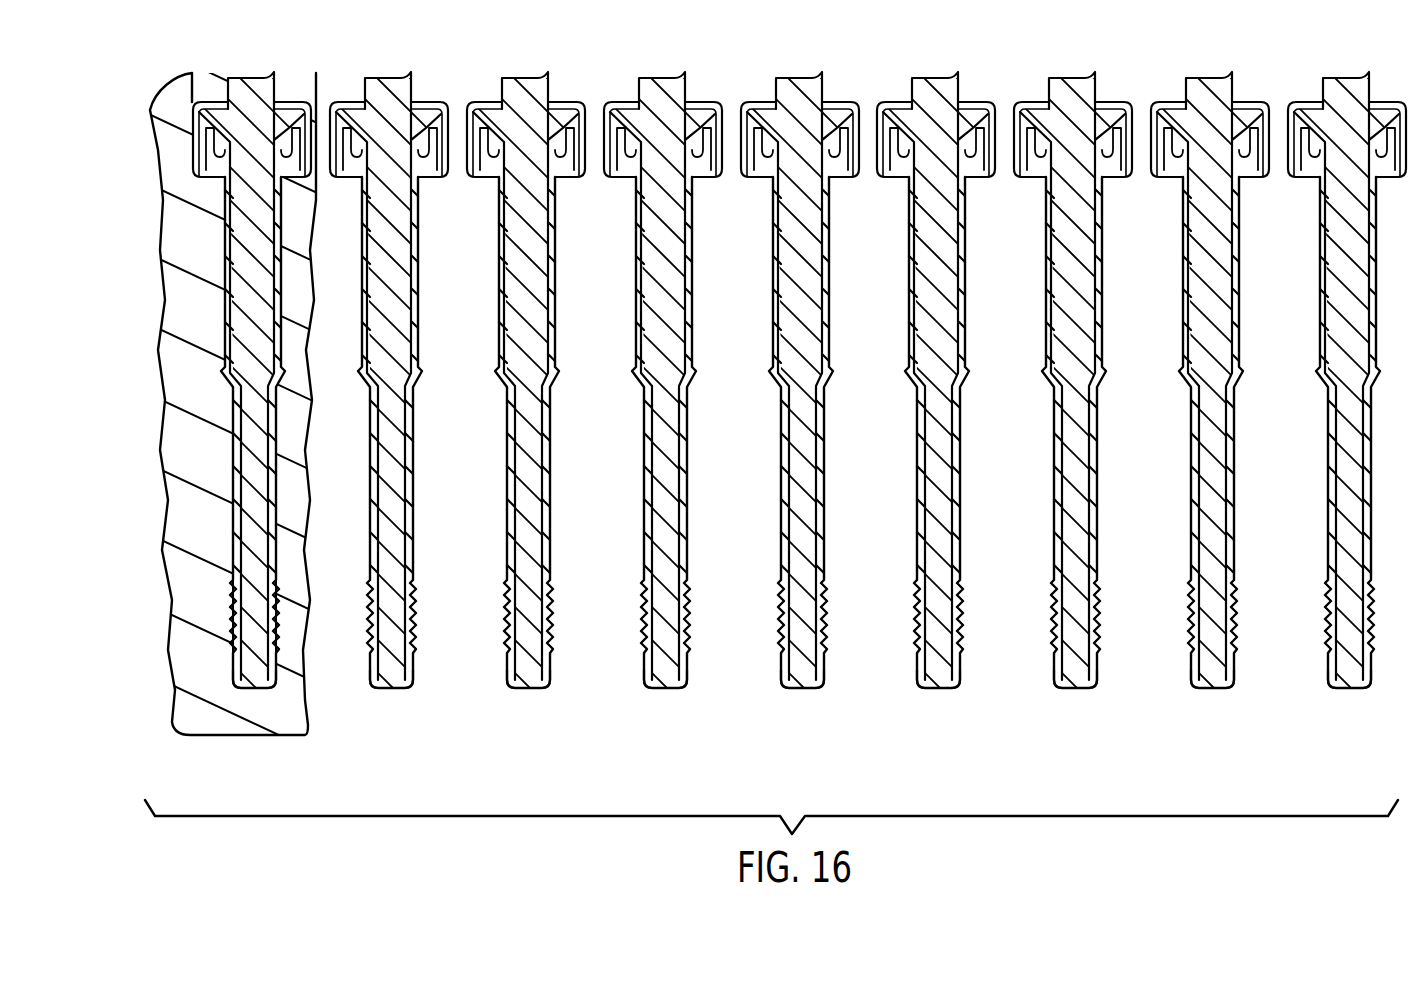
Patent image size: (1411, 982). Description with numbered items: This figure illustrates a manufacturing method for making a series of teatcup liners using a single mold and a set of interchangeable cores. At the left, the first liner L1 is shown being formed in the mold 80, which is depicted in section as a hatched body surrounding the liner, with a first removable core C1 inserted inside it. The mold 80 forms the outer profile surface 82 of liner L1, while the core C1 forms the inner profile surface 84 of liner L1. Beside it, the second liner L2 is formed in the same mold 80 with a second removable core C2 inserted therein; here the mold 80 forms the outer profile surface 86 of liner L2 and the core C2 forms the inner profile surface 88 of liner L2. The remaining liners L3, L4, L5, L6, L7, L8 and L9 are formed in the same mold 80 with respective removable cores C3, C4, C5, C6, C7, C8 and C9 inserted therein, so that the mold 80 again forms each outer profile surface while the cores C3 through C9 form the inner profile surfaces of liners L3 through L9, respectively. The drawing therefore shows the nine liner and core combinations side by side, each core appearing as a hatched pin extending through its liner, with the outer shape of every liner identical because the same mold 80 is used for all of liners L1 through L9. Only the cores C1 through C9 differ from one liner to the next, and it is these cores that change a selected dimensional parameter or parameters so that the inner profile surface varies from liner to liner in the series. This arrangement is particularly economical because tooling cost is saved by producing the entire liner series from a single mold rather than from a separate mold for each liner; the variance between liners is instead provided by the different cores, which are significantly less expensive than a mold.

The mold 80 is at (193, 672).
The outer profile surface 82 is at (232, 552).
The inner profile surface 84 is at (242, 530).
The outer profile surface 86 is at (372, 522).
The inner profile surface 88 is at (382, 552).
The first removable core C1 is at (312, 630).
The second removable core C2 is at (375, 611).
The removable core C3 is at (512, 611).
The removable core C4 is at (649, 611).
The removable core C5 is at (786, 611).
The removable core C6 is at (922, 611).
The removable core C7 is at (1059, 611).
The removable core C8 is at (1196, 611).
The removable core C9 is at (1333, 611).
The first liner L1 is at (236, 672).
The second liner L2 is at (369, 667).
The liner L3 is at (506, 667).
The liner L4 is at (643, 667).
The liner L5 is at (780, 667).
The liner L6 is at (916, 667).
The liner L7 is at (1053, 667).
The liner L8 is at (1190, 667).
The liner L9 is at (1327, 667).